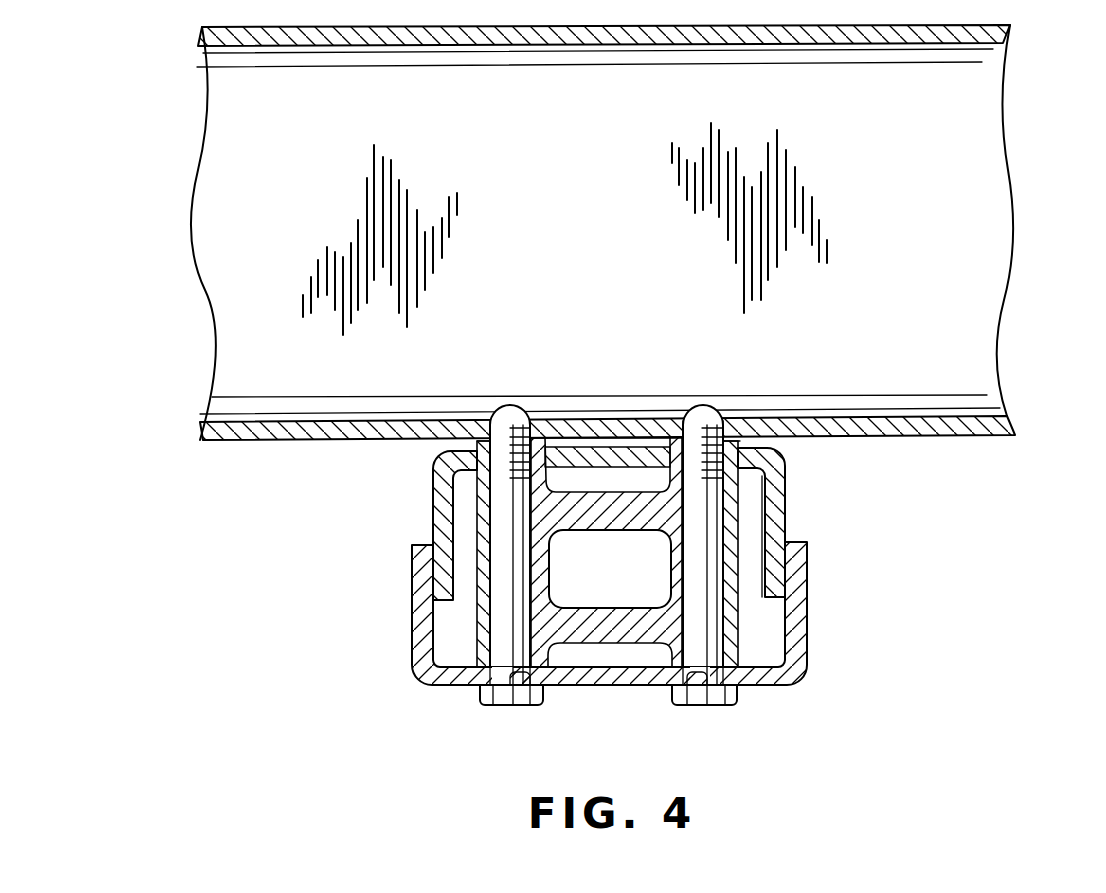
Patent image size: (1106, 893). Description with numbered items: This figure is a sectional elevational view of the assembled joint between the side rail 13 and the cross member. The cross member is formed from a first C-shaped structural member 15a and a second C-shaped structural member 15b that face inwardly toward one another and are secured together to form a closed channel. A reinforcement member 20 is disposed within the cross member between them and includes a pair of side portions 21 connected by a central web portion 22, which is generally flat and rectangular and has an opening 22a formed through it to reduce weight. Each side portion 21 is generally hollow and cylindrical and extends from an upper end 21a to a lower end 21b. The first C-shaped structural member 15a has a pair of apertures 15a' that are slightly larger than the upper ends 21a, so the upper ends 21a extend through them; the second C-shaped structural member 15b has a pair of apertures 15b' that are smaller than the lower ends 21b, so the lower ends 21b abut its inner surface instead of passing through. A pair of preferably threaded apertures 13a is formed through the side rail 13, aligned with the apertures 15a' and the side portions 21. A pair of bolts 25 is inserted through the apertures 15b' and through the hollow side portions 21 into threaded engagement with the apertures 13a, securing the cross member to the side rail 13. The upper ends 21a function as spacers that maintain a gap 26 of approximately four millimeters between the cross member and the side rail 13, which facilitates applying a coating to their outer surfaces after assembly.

The side rail 13 is at (968, 330).
The apertures 13a is at (495, 427).
The first C-shaped structural member 15a is at (688, 524).
The apertures 15a' is at (606, 497).
The second C-shaped structural member 15b is at (546, 613).
The apertures 15b' is at (621, 721).
The reinforcement member 20 is at (745, 562).
The side portions 21 is at (480, 515).
The upper ends 21a is at (478, 442).
The lower ends 21b is at (482, 645).
The web portion 22 is at (612, 630).
The opening 22a is at (580, 538).
The bolts 25 is at (480, 705).
The gap 26 is at (592, 445).